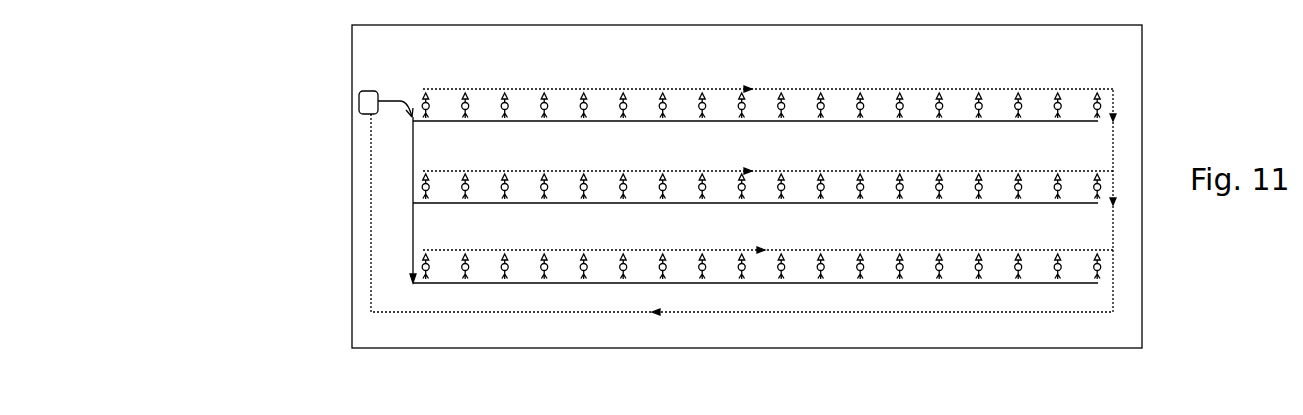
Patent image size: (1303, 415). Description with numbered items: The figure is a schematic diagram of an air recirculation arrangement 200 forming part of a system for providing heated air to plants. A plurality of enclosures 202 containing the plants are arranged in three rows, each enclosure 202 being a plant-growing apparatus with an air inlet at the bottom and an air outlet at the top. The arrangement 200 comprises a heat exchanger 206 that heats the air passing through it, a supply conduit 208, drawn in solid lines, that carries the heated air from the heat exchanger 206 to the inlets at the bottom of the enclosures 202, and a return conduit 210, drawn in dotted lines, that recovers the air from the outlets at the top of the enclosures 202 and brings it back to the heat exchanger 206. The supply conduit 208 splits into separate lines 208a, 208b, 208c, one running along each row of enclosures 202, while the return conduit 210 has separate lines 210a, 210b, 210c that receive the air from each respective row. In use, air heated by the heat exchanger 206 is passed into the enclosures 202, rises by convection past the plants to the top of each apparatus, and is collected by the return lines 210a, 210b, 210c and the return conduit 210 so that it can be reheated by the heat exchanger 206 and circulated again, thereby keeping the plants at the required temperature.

The air recirculation arrangement 200 is at (1158, 90).
The enclosure 202 is at (429, 104).
The heat exchanger 206 is at (355, 105).
The supply conduit 208 is at (412, 150).
The supply line 208a is at (793, 131).
The supply line 208b is at (813, 207).
The supply line 208c is at (870, 283).
The return conduit 210 is at (713, 312).
The return line 210a is at (678, 88).
The return line 210b is at (652, 160).
The return line 210c is at (680, 252).